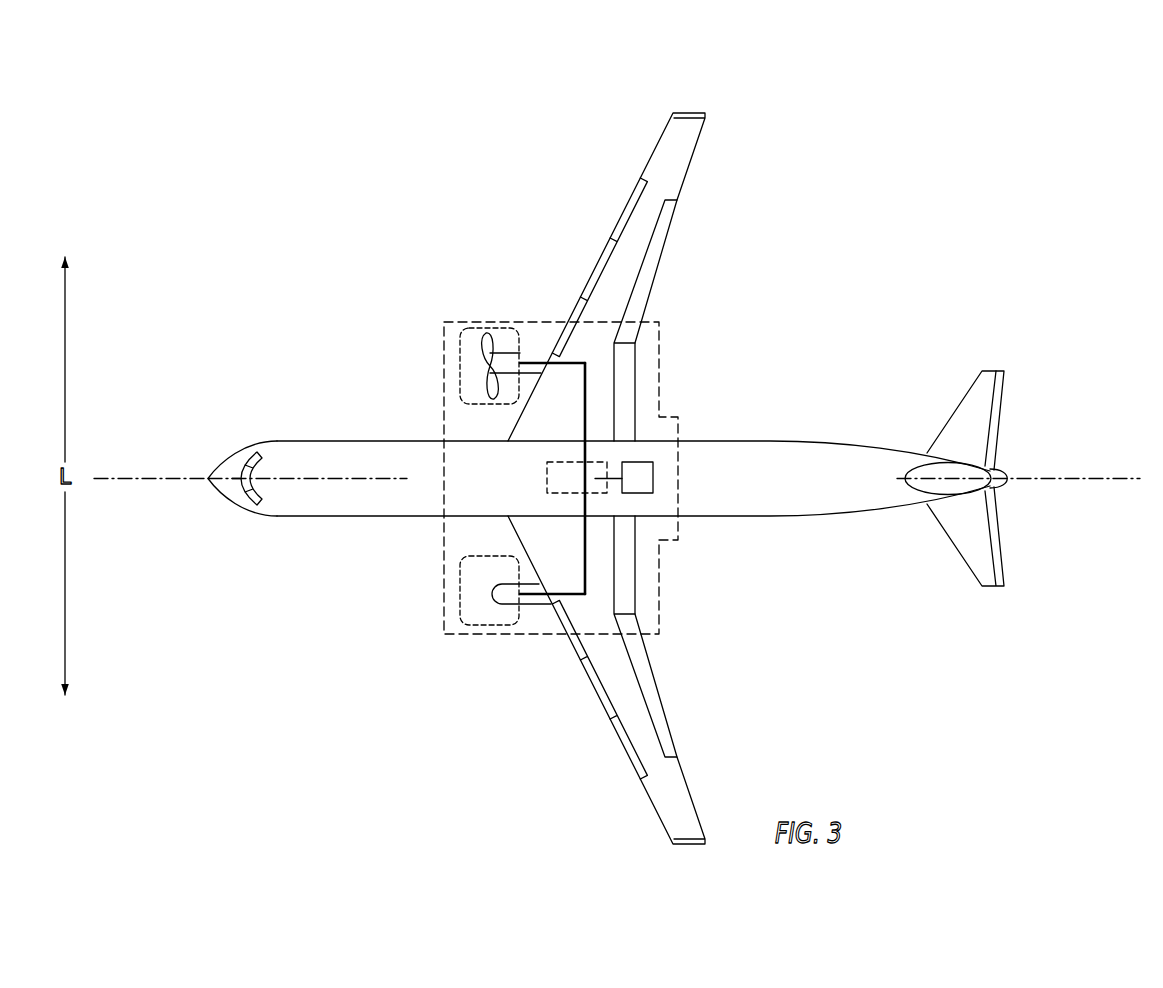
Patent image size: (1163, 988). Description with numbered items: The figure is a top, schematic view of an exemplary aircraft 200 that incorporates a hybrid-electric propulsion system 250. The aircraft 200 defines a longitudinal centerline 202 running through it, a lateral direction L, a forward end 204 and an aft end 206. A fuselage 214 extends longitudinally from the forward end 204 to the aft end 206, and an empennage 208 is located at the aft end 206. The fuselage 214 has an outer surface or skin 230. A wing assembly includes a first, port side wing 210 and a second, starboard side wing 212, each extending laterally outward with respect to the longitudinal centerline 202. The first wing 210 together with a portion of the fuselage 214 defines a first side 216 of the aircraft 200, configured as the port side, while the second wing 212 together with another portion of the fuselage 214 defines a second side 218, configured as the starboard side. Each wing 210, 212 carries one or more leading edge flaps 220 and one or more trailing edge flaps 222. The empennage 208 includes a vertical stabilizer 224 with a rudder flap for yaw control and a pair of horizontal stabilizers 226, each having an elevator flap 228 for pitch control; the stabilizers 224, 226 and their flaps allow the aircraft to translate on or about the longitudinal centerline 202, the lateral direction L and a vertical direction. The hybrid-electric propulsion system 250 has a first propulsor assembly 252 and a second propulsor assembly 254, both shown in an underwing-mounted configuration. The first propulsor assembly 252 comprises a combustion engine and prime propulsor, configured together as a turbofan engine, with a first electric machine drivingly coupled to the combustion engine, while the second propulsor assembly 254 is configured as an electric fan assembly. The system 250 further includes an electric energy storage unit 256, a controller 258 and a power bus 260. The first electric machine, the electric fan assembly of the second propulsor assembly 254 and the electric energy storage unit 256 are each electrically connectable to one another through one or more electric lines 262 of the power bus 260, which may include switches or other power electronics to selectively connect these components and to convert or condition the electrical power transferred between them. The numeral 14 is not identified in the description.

The longitudinal axis 14 is at (149, 479).
The aircraft 200 is at (627, 478).
The longitudinal centerline 202 is at (1098, 478).
The forward end 204 is at (203, 514).
The aft end 206 is at (955, 577).
The empennage 208 is at (1011, 484).
The first, port side wing 210 is at (606, 680).
The second, starboard side wing 212 is at (678, 159).
The fuselage 214 is at (273, 500).
The first side 216 is at (474, 647).
The second side 218 is at (454, 322).
The leading edge flap 220 is at (642, 735).
The trailing edge flap 222 is at (645, 636).
The vertical stabilizer 224 is at (1008, 488).
The horizontal stabilizer 226 is at (990, 397).
The elevator flap 228 is at (995, 393).
The outer surface or skin 230 is at (777, 485).
The hybrid-electric propulsion system 250 is at (660, 386).
The first propulsor assembly 252 is at (479, 605).
The second propulsor assembly 254 is at (546, 341).
The electric energy storage unit 256 is at (653, 483).
The controller 258 is at (545, 472).
The power bus 260 is at (625, 456).
The electric line 262 is at (585, 399).